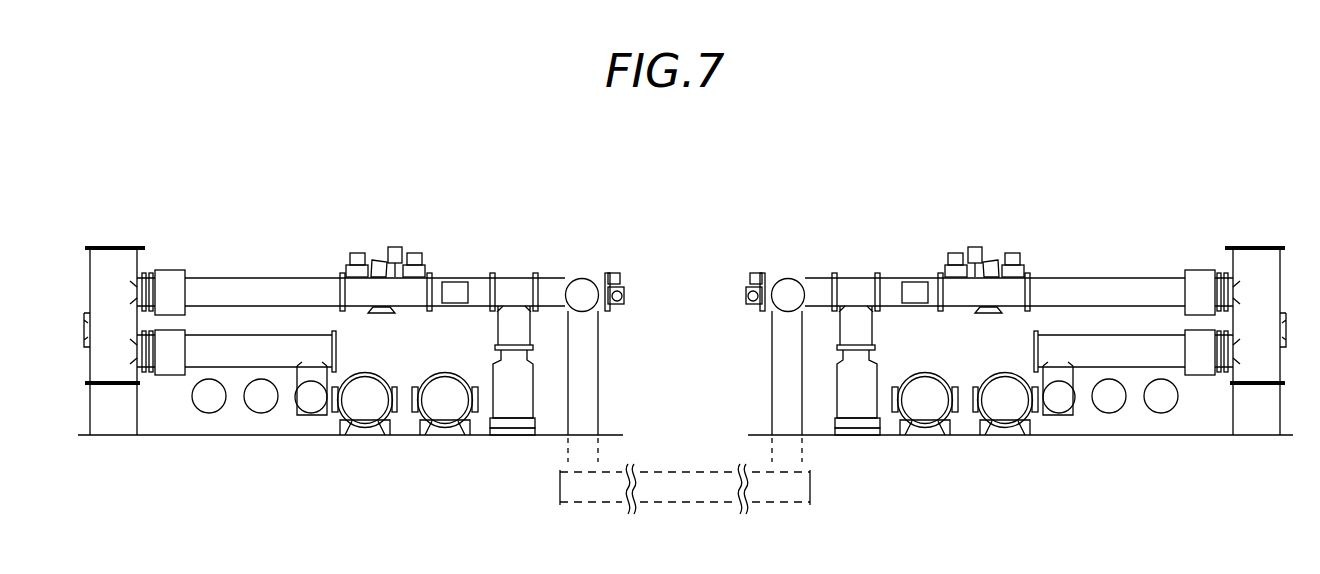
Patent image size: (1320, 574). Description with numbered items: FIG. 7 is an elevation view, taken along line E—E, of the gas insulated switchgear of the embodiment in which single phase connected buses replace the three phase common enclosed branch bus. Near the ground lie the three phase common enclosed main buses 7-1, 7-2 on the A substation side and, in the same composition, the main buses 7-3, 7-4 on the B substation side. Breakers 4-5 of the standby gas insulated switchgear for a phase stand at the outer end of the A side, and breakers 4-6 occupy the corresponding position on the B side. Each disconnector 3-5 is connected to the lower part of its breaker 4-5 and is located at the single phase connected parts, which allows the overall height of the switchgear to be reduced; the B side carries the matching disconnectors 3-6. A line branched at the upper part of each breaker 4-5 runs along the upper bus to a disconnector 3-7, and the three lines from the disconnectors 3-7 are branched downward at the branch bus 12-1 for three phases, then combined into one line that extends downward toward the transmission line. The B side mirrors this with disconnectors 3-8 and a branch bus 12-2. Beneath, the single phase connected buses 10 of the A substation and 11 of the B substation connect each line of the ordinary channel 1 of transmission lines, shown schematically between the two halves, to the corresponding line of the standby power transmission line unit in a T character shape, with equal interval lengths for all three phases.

The ordinary channel of gas insulated transmission lines 1 is at (692, 493).
The disconnector for the standby gas insulated switchgear 3-5 is at (313, 415).
The valve 3-6 is at (1058, 415).
The disconnector 3-7 is at (380, 285).
The valve 3-8 is at (987, 287).
The breaker for the standby gas insulated switchgear 4-5 is at (113, 267).
The tank 4-6 is at (1262, 268).
The three phase common enclosed main bus 7-1 is at (370, 415).
The three phase common enclosed main bus 7-2 is at (448, 415).
The pump 7-3 is at (923, 415).
The pump 7-4 is at (1000, 415).
The single phase connected bus 10 is at (303, 425).
The single phase connected bus 11 is at (1067, 425).
The branch bus for three phases 12-1 is at (578, 278).
The flow meter 12-2 is at (788, 280).